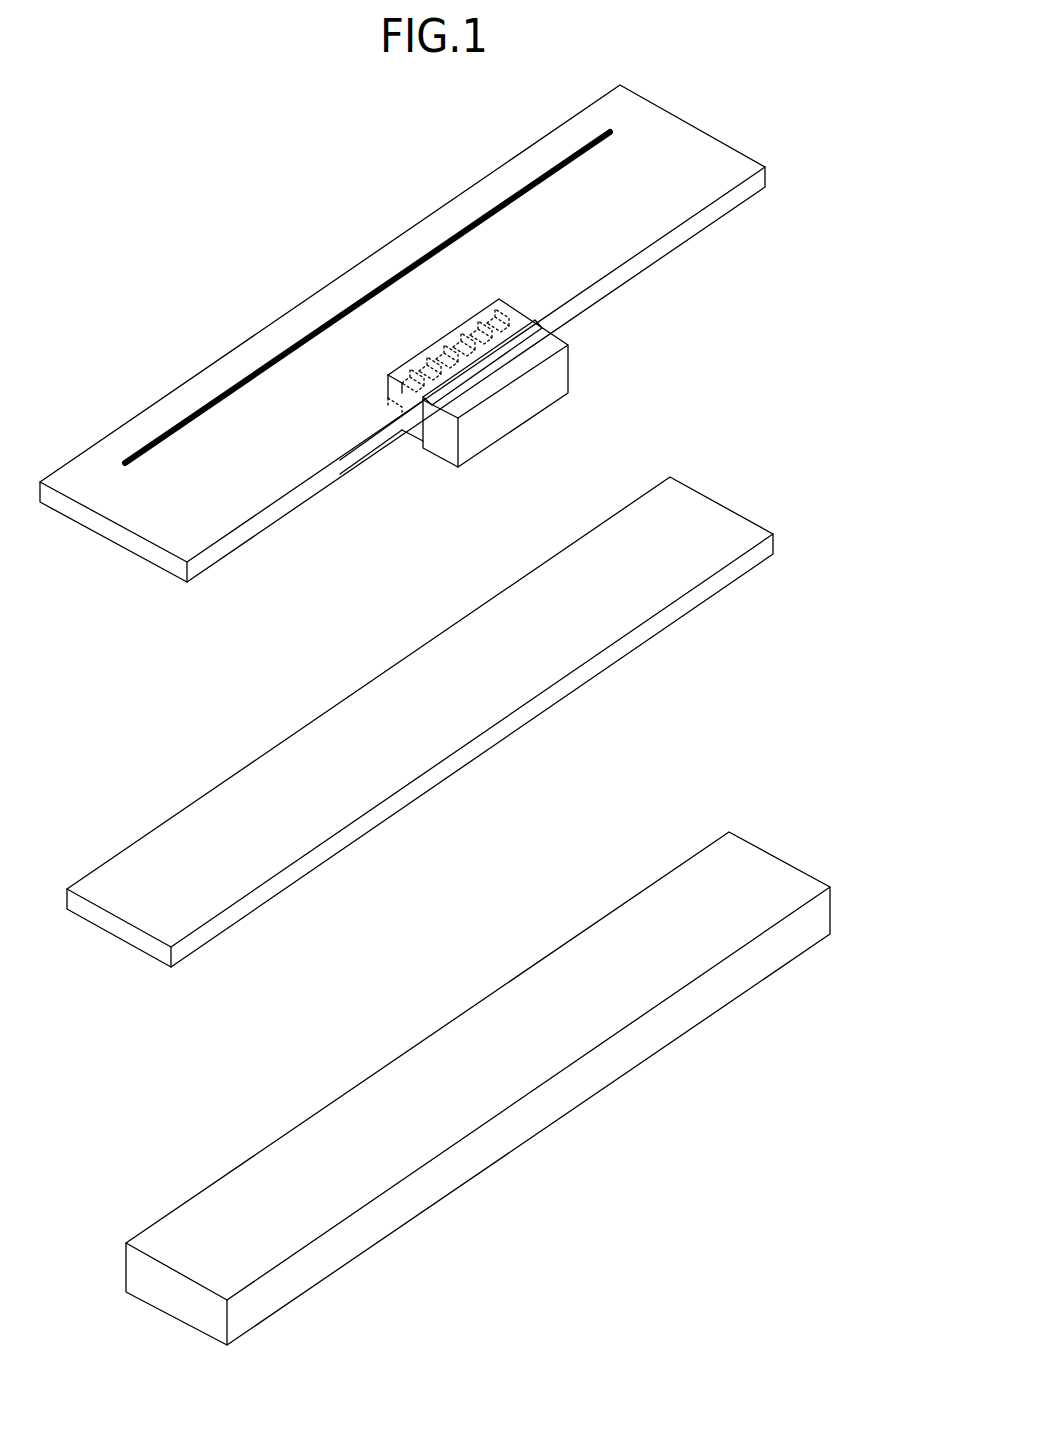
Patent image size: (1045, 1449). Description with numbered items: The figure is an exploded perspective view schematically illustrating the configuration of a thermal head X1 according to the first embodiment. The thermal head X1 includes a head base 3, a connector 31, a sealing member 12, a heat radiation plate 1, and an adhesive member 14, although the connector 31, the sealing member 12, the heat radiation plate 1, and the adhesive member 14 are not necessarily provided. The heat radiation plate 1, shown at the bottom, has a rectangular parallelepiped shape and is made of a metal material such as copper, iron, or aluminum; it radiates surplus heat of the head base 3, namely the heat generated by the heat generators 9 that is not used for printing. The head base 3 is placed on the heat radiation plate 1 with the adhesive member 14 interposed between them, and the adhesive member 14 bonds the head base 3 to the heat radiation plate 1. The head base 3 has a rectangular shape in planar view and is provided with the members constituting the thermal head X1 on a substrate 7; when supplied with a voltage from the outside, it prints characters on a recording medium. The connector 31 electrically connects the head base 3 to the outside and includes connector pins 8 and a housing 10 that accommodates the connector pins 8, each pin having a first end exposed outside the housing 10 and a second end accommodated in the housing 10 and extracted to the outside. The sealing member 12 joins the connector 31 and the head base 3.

The heat radiation plate 1 is at (175, 1160).
The head base 3 is at (218, 318).
The substrate 7 is at (712, 152).
The connector pins 8 is at (512, 313).
The heat generators 9 is at (545, 178).
The housing 10 is at (543, 368).
The sealing member 12 is at (395, 393).
The adhesive member 14 is at (163, 787).
The connector 31 is at (643, 287).
The thermal head X1 is at (200, 126).